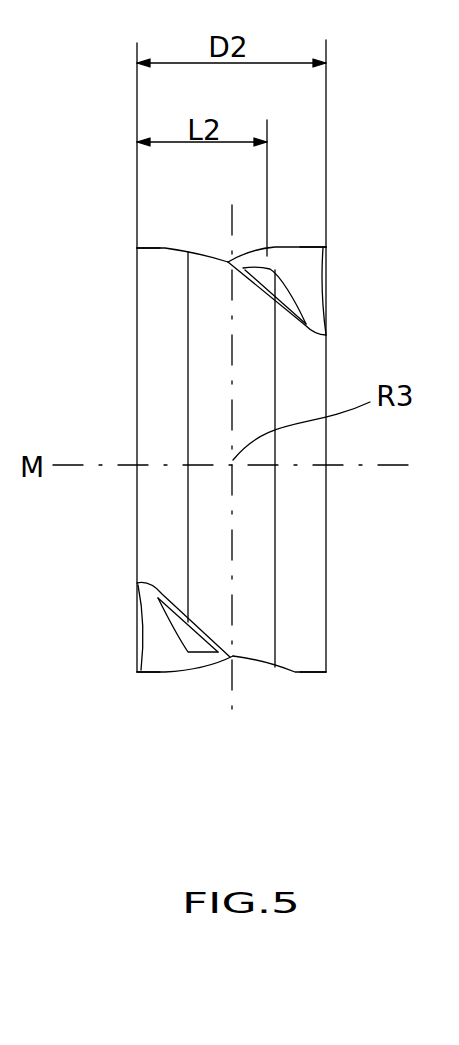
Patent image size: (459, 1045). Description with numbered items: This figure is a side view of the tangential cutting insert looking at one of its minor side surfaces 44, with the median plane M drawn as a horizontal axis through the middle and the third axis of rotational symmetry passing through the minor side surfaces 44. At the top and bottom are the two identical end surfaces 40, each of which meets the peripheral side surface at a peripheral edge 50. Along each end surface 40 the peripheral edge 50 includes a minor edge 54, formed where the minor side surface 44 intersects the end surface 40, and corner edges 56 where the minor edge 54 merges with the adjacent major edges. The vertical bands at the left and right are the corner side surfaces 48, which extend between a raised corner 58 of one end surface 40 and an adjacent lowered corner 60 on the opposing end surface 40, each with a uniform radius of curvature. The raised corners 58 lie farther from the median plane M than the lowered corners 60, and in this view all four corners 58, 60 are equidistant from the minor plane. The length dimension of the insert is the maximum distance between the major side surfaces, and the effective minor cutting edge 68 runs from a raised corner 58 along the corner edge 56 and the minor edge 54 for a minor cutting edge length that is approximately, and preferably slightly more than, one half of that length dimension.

The end surface 40 is at (297, 252).
The minor side surface 44 is at (255, 495).
The corner side surface 48 is at (167, 489).
The peripheral edge 50 is at (138, 675).
The minor edge 54 is at (250, 667).
The corner edge 56 is at (168, 248).
The raised corner 58 is at (147, 247).
The lowered corner 60 is at (324, 334).
The effective minor cutting edge 68 is at (194, 250).